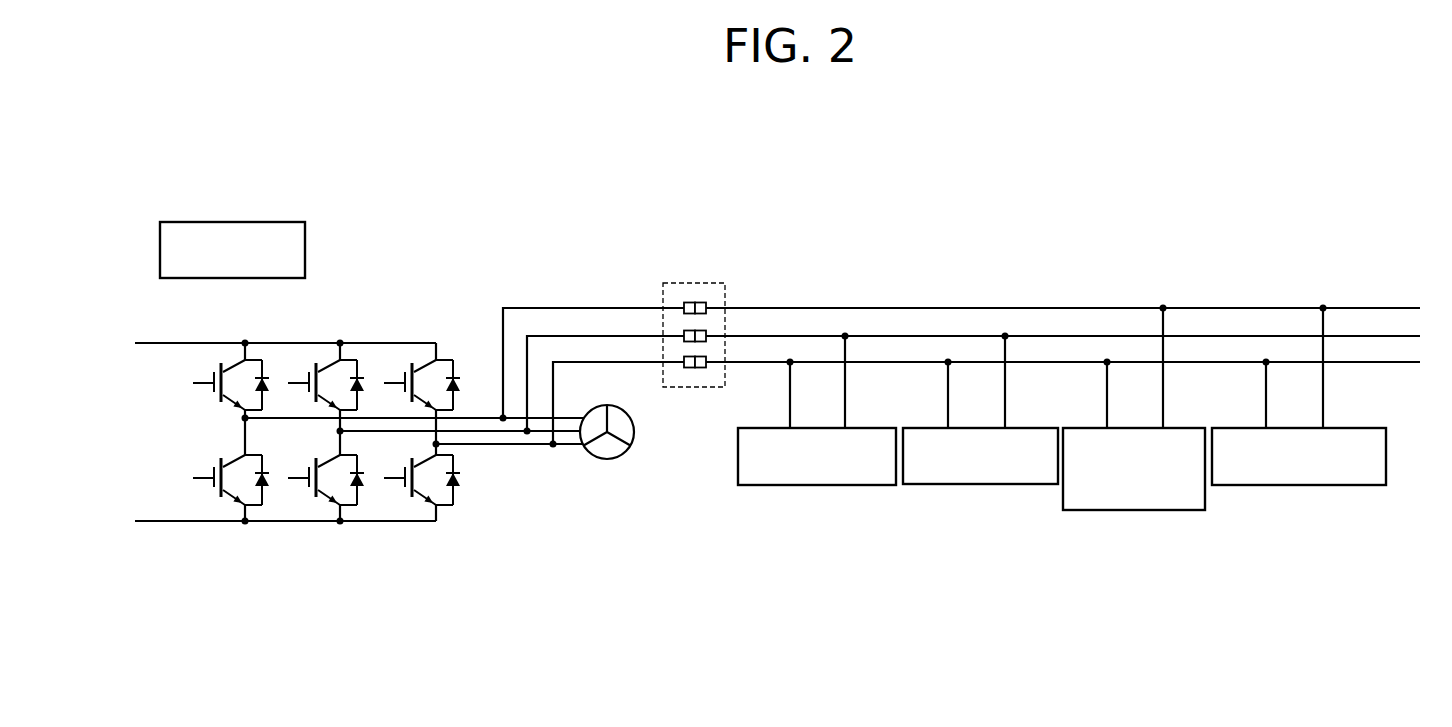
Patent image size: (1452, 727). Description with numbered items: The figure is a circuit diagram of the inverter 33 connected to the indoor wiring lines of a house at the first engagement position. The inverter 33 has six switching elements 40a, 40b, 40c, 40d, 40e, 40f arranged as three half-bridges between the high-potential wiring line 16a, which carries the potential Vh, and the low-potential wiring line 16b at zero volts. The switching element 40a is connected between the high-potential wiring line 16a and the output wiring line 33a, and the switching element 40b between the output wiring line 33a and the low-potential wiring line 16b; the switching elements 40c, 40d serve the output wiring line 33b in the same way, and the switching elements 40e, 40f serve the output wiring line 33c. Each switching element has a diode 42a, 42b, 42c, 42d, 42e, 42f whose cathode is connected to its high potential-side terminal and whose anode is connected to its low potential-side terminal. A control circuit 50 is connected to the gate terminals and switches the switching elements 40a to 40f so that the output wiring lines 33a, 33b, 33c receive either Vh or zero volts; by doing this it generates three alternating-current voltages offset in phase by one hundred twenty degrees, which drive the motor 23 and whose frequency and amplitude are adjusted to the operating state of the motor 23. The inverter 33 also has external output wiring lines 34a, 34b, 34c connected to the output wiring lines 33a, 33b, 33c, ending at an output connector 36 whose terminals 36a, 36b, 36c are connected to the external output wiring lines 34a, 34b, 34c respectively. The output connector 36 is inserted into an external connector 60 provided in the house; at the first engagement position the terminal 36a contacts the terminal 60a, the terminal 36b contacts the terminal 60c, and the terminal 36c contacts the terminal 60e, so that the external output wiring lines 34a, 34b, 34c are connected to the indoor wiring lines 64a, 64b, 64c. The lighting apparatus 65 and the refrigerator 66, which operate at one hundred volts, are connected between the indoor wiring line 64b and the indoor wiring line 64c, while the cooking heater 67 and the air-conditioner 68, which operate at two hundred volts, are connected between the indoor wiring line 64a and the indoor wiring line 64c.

The high-potential wiring line 16a is at (152, 340).
The low-potential wiring line 16b is at (152, 522).
The control circuit 50 is at (268, 222).
The inverter 33 is at (327, 489).
The switching element 40a is at (200, 383).
The switching element 40b is at (200, 478).
The switching element 40c is at (295, 383).
The switching element 40d is at (295, 478).
The switching element 40e is at (391, 383).
The switching element 40f is at (391, 478).
The diode 42a is at (263, 358).
The diode 42b is at (263, 507).
The diode 42c is at (358, 358).
The diode 42d is at (358, 507).
The diode 42e is at (454, 358).
The diode 42f is at (454, 507).
The output wiring line 33a is at (473, 420).
The output wiring line 33b is at (503, 433).
The output wiring line 33c is at (537, 446).
The motor 23 is at (603, 460).
The external output wiring line 34a is at (513, 305).
The external output wiring line 34b is at (538, 335).
The external output wiring line 34c is at (572, 362).
The output connector 36 is at (660, 333).
The terminal 36a is at (688, 302).
The terminal 36b is at (683, 334).
The terminal 36c is at (690, 386).
The external connector 60 is at (753, 347).
The terminal 60a is at (700, 302).
The terminal 60c is at (707, 334).
The terminal 60e is at (700, 386).
The indoor wiring line 64a is at (1385, 308).
The indoor wiring line 64b is at (1365, 336).
The indoor wiring line 64c is at (1355, 362).
The lighting apparatus 65 is at (818, 485).
The refrigerator 66 is at (975, 485).
The cooking heater 67 is at (1135, 510).
The air-conditioner 68 is at (1296, 485).